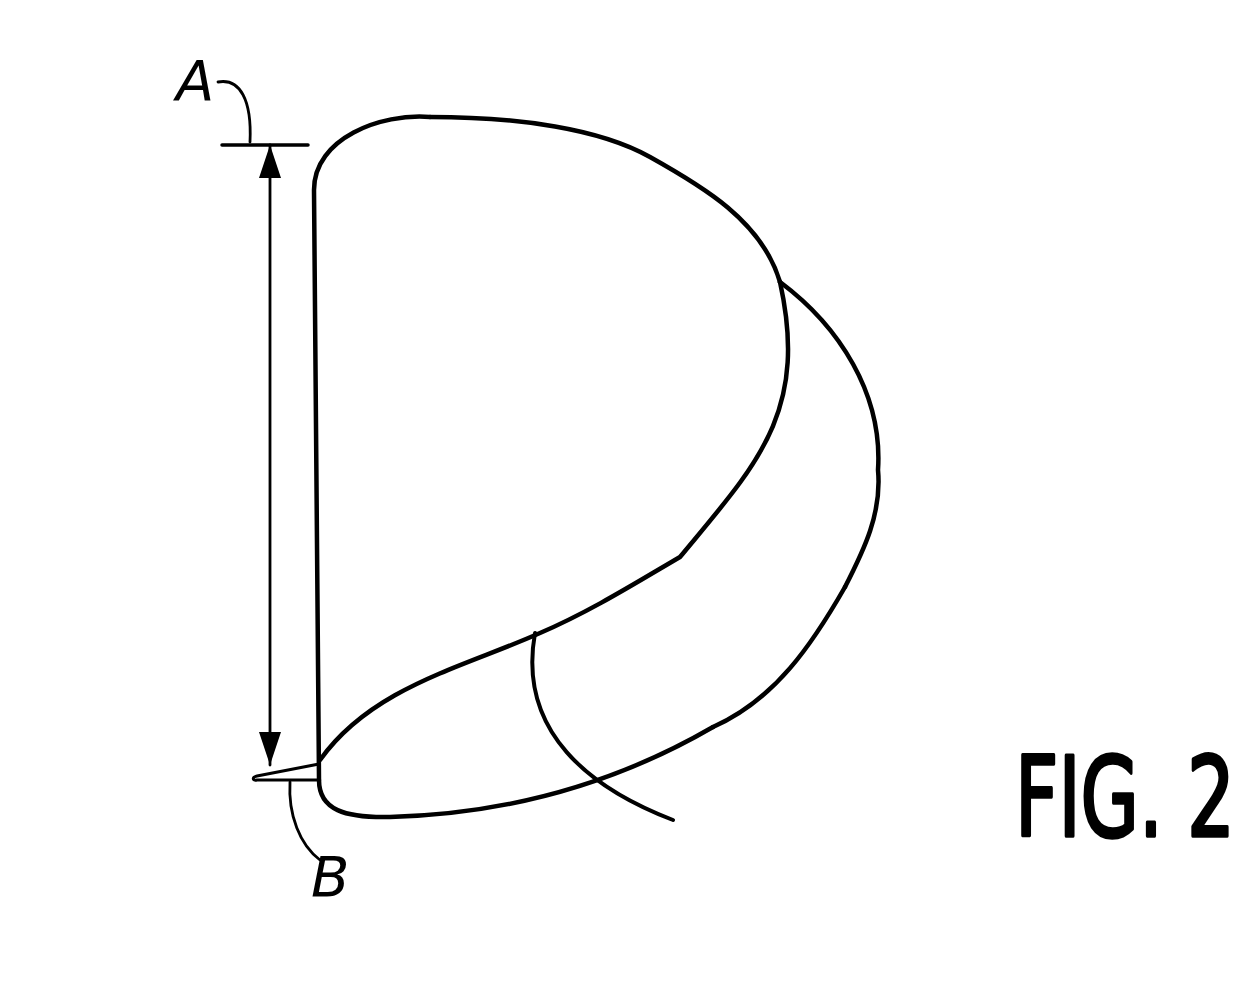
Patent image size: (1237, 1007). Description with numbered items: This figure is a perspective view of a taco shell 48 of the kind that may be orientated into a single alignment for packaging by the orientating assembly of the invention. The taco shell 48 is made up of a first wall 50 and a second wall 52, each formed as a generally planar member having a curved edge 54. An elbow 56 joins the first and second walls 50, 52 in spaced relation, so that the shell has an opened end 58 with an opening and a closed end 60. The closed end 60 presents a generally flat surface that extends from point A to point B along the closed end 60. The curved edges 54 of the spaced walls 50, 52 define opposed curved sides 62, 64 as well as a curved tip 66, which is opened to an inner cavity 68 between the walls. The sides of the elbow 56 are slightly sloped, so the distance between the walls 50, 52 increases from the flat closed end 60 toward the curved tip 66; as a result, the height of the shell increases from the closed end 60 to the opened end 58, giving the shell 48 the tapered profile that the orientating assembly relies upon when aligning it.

The taco shell 48 is at (940, 248).
The first wall 50 is at (544, 438).
The second wall 52 is at (833, 610).
The curved edge 54 is at (648, 152).
The elbow 56 is at (253, 780).
The opened end 58 is at (827, 422).
The closed end 60 is at (315, 493).
The curved side 62 is at (475, 115).
The curved side 64 is at (667, 750).
The curved tip 66 is at (728, 517).
The inner cavity 68 is at (688, 665).